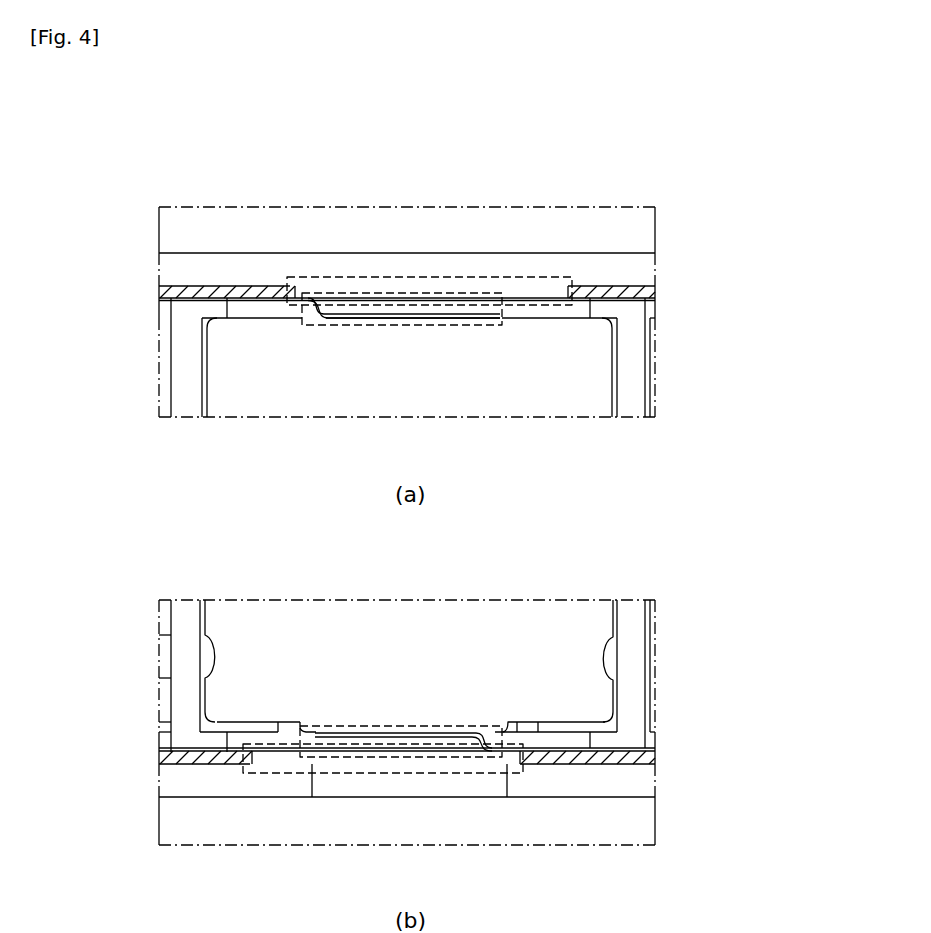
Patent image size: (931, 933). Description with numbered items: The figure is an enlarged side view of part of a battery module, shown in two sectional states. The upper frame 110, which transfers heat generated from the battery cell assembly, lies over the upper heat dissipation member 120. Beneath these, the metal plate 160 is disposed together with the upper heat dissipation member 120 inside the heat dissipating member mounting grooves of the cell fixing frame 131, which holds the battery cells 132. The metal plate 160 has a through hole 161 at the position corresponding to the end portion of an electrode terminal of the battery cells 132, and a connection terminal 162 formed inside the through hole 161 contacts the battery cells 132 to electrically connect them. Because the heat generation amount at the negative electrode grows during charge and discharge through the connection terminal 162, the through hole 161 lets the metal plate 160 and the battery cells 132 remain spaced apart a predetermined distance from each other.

The upper frame 110 is at (635, 233).
The upper heat dissipation member 120 is at (638, 268).
The cell fixing frame 131 is at (637, 343).
The battery cells 132 is at (595, 375).
The metal plate 160 is at (638, 292).
The through hole 161 is at (352, 277).
The connection terminal 162 is at (352, 326).